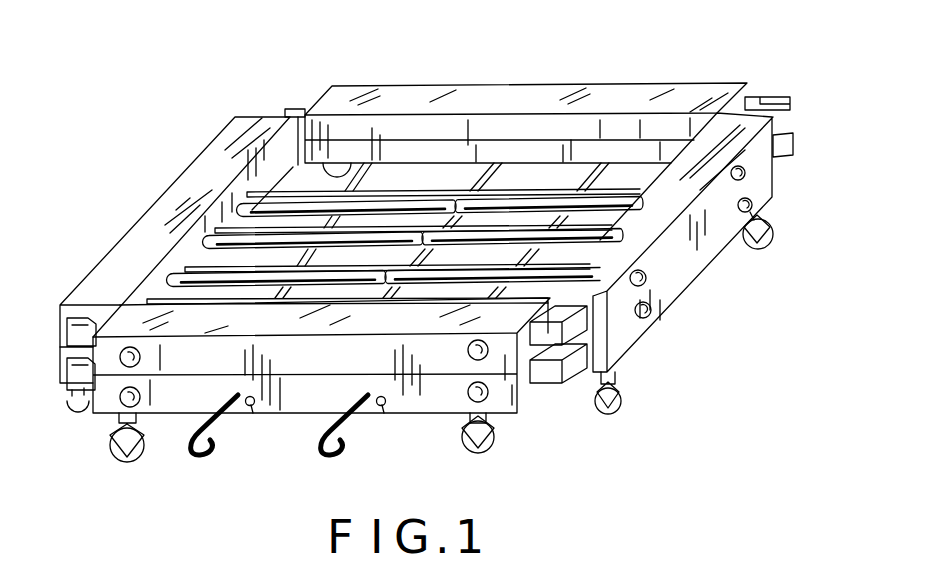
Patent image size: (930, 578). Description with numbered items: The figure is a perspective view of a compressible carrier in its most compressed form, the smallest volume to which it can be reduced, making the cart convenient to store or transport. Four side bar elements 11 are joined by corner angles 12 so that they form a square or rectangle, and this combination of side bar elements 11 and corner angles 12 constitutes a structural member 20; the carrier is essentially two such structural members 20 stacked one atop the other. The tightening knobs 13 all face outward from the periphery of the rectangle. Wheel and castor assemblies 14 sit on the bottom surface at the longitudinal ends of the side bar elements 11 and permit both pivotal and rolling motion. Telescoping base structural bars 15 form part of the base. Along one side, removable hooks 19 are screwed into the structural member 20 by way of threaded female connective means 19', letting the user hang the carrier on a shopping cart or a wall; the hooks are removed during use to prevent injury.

The side bar element 11 is at (614, 96).
The corner angle 12 is at (773, 96).
The tightening knob 13 is at (762, 250).
The wheel and castor assembly 14 is at (607, 418).
The telescoping base structural bar 15 is at (430, 196).
The removable hook 19 is at (269, 453).
The threaded female connective means 19' is at (310, 447).
The structural member 20 is at (632, 328).